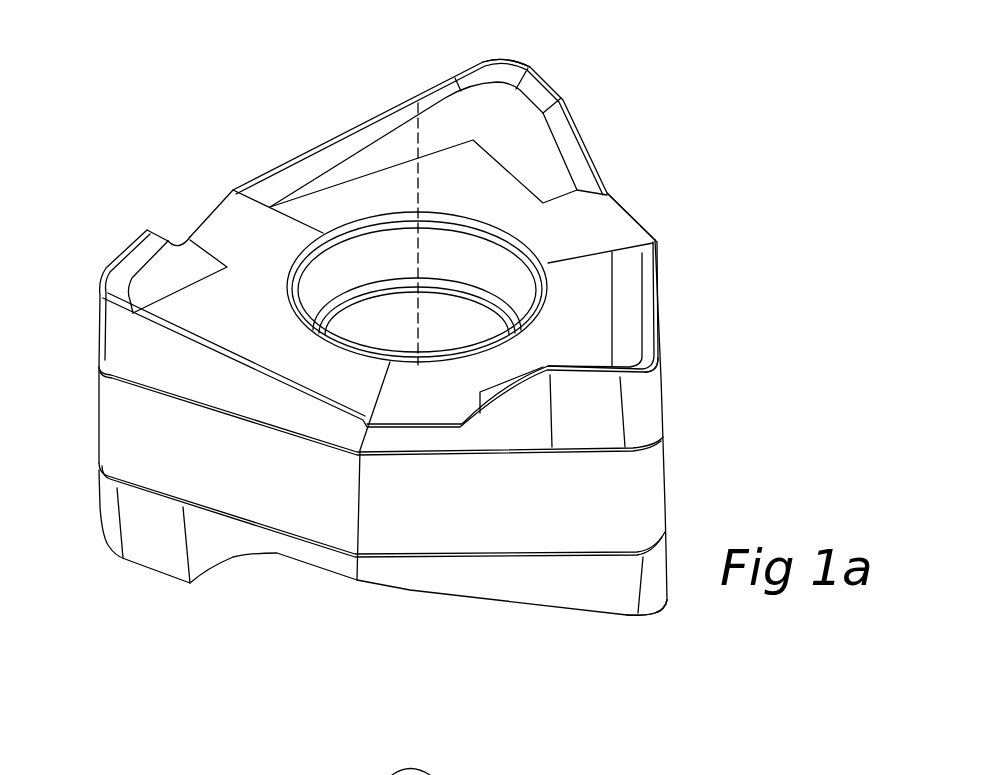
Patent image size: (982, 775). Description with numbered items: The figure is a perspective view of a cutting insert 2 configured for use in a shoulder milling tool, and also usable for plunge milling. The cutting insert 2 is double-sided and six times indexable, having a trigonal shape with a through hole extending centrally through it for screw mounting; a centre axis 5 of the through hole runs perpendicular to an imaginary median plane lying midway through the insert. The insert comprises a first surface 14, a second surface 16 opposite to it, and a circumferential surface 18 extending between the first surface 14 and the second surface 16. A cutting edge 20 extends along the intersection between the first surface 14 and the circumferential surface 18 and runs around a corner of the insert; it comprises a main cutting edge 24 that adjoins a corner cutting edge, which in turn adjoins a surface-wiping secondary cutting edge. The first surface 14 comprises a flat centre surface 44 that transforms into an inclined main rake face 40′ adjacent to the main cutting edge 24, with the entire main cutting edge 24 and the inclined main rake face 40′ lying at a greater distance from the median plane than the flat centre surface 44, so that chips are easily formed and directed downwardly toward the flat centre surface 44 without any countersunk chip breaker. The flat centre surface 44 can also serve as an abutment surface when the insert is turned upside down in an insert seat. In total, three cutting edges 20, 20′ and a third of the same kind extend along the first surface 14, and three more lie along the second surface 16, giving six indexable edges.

The cutting insert 2 is at (228, 155).
The first surface 14 is at (333, 160).
The centre axis 5 is at (417, 124).
The flat centre surface 44 is at (475, 192).
The cutting edge 20′ is at (484, 60).
The inclined main rake face 40′ is at (636, 258).
The main cutting edge 24 is at (672, 324).
The cutting edge 20 is at (614, 392).
The circumferential surface 18 is at (122, 431).
The second surface 16 is at (333, 590).